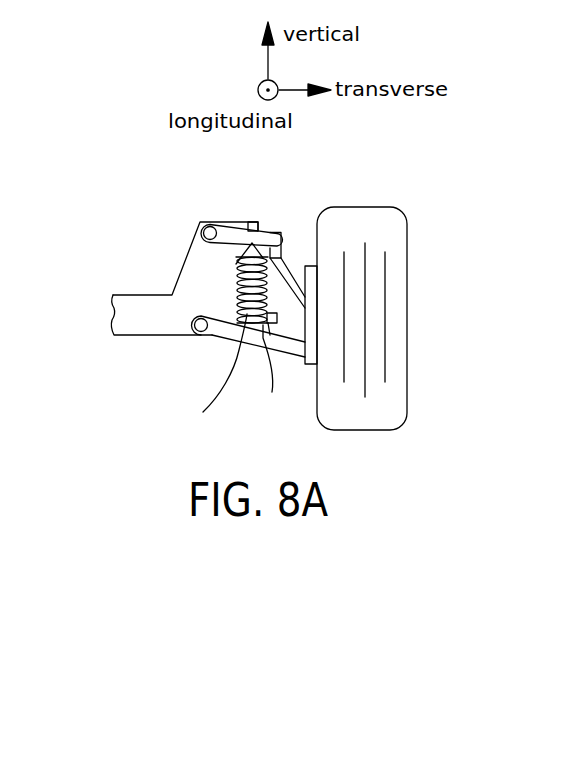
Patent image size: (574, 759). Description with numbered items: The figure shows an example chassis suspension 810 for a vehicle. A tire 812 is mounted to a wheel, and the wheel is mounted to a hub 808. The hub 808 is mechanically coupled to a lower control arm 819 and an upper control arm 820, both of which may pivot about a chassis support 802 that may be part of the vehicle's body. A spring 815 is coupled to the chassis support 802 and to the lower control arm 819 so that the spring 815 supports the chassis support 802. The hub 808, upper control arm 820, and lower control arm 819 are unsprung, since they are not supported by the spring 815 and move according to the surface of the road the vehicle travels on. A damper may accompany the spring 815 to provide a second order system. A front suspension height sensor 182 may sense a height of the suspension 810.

The chassis suspension 810 is at (164, 199).
The upper control arm 820 is at (250, 221).
The tire 812 is at (408, 310).
The chassis support 802 is at (132, 336).
The spring 815 is at (236, 264).
The lower control arm 819 is at (203, 374).
The front suspension height sensor 182 is at (256, 374).
The hub 808 is at (306, 365).